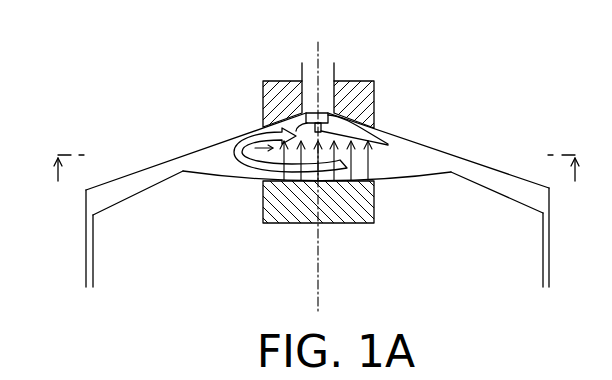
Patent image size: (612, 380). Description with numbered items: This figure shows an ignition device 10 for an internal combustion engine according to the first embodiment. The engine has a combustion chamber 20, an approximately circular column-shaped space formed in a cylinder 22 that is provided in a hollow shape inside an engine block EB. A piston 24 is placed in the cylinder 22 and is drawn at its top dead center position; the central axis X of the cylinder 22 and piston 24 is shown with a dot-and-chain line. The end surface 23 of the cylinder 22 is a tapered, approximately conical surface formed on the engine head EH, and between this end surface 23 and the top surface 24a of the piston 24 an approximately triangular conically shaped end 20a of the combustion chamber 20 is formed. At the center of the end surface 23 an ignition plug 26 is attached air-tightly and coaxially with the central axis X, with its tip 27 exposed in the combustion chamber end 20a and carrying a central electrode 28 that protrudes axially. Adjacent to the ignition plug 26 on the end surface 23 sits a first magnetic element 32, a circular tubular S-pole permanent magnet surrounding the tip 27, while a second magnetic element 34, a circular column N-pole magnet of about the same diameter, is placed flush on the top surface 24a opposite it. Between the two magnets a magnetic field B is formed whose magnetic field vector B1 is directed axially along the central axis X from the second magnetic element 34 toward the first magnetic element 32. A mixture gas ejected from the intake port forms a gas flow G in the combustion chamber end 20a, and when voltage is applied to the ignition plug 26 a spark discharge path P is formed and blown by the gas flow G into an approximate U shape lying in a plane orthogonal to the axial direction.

The ignition device 10 is at (405, 99).
The combustion chamber 20 is at (138, 185).
The end of the combustion chamber 20a is at (190, 158).
The cylinder 22 is at (540, 203).
The end surface of the cylinder 23 is at (486, 170).
The piston 24 is at (441, 282).
The top surface of the piston 24a is at (400, 173).
The ignition plug 26 is at (338, 68).
The tip of the ignition plug 27 is at (372, 150).
The central electrode 28 is at (296, 81).
The first magnetic element 32 is at (262, 101).
The second magnetic element 34 is at (262, 212).
The magnetic field B is at (248, 136).
The magnetic field vector B1 is at (264, 177).
The gas flow G is at (222, 173).
The spark discharge path P is at (384, 144).
The central axis X is at (305, 281).
The engine head EH is at (142, 136).
The engine block EB is at (28, 278).